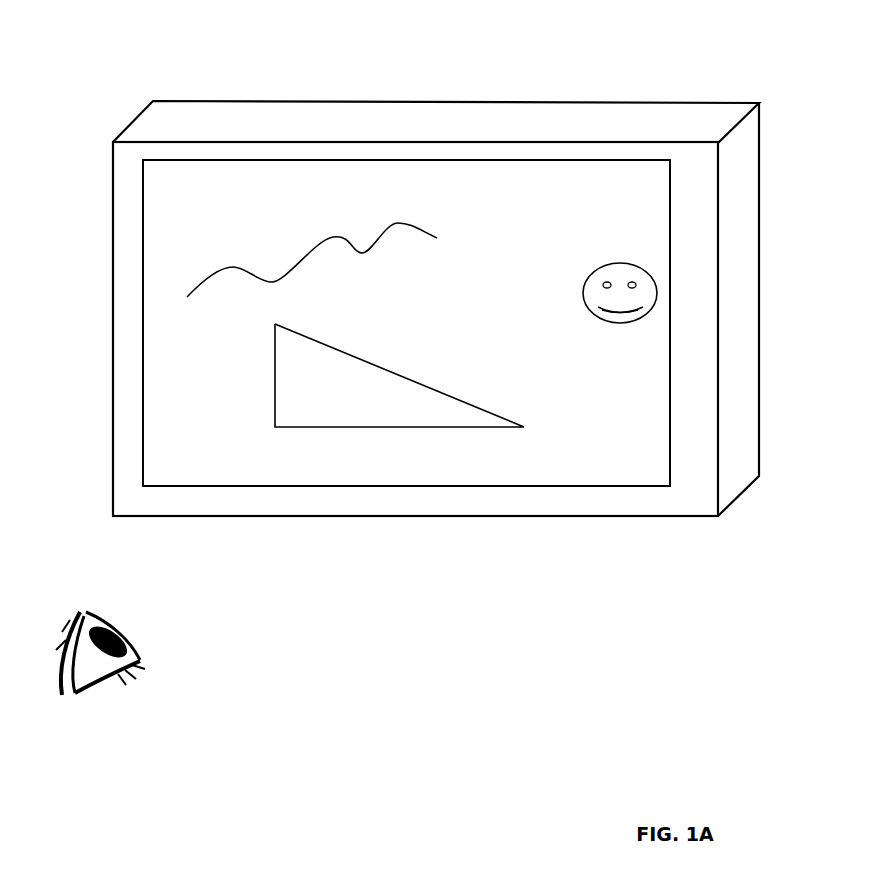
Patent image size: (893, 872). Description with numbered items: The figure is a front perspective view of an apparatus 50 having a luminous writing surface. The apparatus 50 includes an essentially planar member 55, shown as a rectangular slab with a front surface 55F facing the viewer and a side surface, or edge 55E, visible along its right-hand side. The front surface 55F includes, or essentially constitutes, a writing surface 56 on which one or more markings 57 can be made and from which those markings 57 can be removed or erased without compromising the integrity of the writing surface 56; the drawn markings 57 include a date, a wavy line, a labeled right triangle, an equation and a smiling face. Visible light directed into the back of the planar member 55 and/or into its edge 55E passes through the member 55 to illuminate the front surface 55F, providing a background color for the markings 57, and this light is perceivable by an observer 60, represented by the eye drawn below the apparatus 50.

The apparatus 50 is at (94, 81).
The essentially planar member 55 is at (113, 237).
The front surface 55F is at (700, 162).
The side surface (edge) 55E is at (744, 470).
The writing surface 56 is at (538, 177).
The markings 57 is at (625, 324).
The observer 60 is at (83, 692).